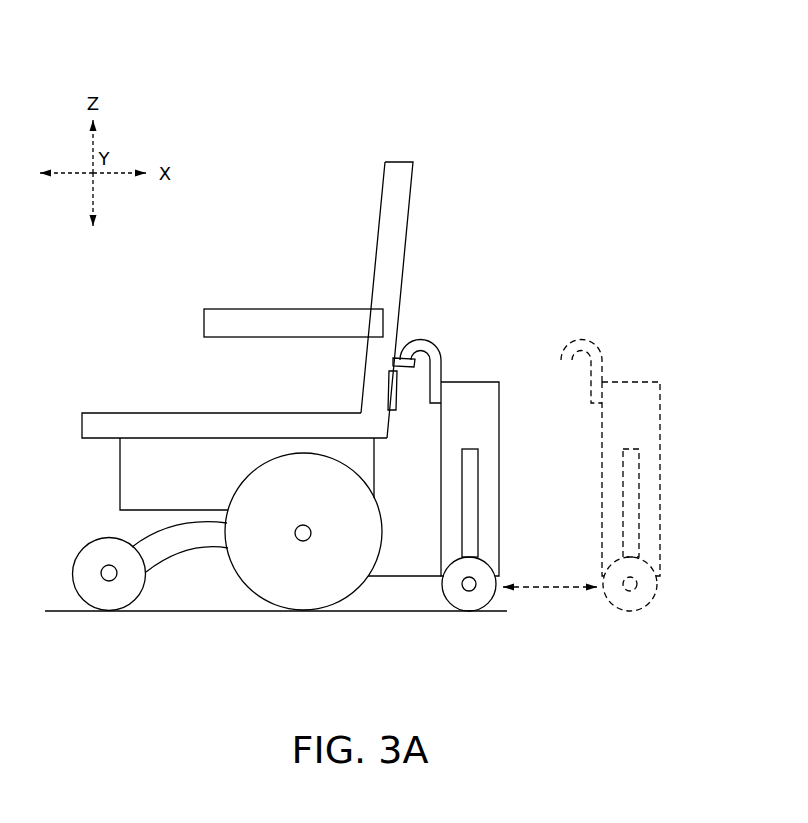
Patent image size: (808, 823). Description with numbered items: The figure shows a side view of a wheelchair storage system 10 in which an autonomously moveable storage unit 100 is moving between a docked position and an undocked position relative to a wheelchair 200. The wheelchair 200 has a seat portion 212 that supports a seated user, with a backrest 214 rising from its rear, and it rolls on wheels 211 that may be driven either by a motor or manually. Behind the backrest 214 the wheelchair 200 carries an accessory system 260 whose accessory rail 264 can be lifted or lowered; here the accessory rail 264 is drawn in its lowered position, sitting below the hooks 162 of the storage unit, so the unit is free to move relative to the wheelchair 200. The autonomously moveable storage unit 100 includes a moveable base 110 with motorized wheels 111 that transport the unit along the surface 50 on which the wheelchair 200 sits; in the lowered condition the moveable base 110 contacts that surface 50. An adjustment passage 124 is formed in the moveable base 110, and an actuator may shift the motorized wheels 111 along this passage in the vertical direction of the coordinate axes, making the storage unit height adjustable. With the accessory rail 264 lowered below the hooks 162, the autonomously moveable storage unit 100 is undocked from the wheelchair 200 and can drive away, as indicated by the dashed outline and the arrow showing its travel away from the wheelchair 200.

The wheelchair storage system 10 is at (282, 110).
The wheelchair 200 is at (443, 163).
The backrest 214 is at (380, 222).
The seat portion 212 is at (119, 411).
The wheels 211 is at (289, 614).
The accessory rail 264 is at (417, 369).
The accessory system 260 is at (405, 480).
The autonomously moveable storage unit 100 is at (505, 367).
The hooks 162 is at (424, 339).
The adjustment passage 124 is at (479, 507).
The moveable base 110 is at (463, 618).
The motorized wheels 111 is at (494, 596).
The surface 50 is at (383, 614).